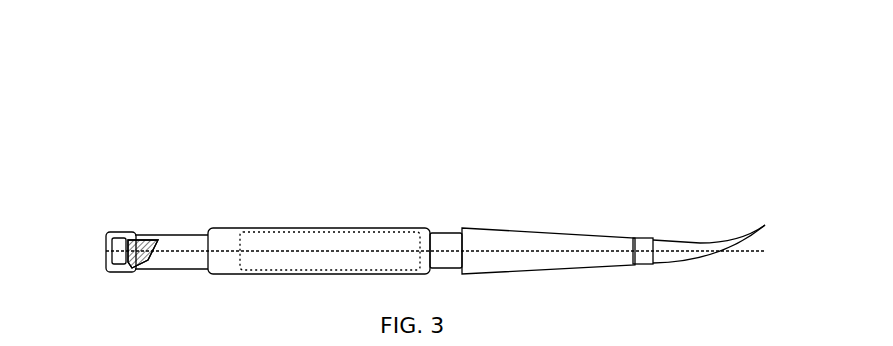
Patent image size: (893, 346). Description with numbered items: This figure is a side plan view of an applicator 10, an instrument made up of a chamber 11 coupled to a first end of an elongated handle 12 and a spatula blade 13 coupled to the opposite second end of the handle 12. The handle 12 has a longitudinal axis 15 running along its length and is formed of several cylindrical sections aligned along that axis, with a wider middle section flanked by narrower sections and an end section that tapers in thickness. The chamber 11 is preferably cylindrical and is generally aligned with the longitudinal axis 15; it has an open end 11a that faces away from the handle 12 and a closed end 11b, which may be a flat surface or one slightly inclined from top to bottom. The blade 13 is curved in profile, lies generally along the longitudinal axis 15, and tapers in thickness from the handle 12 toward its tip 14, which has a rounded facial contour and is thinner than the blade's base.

The applicator 10 is at (414, 137).
The chamber 11 is at (120, 228).
The open end 11a is at (104, 240).
The closed end 11b is at (135, 240).
The elongated handle 12 is at (322, 240).
The spatula blade 13 is at (700, 240).
The tip 14 is at (766, 222).
The longitudinal axis 15 is at (357, 247).